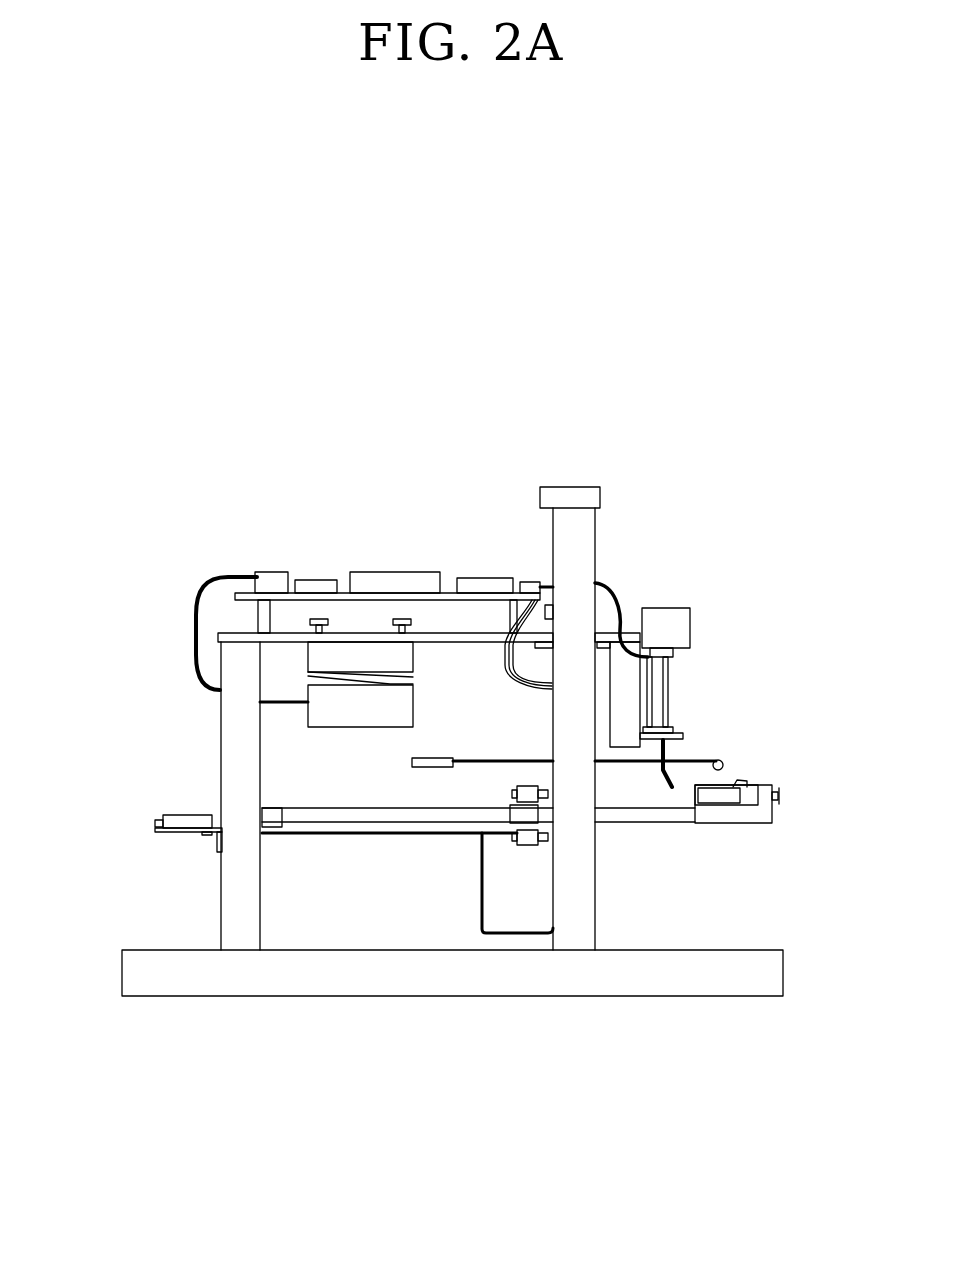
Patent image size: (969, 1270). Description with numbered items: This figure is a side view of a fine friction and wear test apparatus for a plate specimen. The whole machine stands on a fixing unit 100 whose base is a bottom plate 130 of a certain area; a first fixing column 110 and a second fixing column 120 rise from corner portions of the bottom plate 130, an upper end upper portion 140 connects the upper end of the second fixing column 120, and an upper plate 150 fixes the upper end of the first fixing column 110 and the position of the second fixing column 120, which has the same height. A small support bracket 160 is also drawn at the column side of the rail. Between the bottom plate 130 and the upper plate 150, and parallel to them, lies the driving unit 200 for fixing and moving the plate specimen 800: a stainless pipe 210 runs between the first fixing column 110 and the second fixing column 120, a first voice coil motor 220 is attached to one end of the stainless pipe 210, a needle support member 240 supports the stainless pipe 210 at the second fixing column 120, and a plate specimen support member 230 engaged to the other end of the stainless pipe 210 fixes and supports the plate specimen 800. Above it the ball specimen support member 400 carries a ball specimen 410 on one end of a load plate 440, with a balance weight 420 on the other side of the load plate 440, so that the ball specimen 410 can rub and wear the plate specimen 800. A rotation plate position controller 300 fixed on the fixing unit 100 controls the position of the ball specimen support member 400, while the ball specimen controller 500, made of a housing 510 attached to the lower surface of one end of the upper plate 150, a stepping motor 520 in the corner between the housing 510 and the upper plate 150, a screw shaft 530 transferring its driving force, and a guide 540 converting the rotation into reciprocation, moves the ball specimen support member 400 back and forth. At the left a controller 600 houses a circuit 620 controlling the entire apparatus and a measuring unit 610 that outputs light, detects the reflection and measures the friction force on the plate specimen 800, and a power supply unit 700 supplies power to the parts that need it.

The fixing unit 100 is at (441, 800).
The first fixing column 110 is at (295, 920).
The second fixing column 120 is at (587, 920).
The bottom plate 130 is at (707, 997).
The upper end upper portion 140 is at (600, 494).
The upper plate 150 is at (617, 630).
The support bracket 160 is at (202, 837).
The driving unit 200 is at (399, 868).
The stainless pipe 210 is at (368, 823).
The first voice coil motor 220 is at (170, 848).
The plate specimen support member 230 is at (722, 825).
The needle support member 240 is at (528, 852).
The rotation plate position controller 300 is at (528, 565).
The ball specimen support member 400 is at (642, 729).
The ball specimen 410 is at (725, 765).
The balance weight 420 is at (435, 755).
The load plate 440 is at (500, 757).
The ball specimen controller 500 is at (721, 648).
The housing 510 is at (630, 677).
The stepping motor 520 is at (690, 613).
The screw shaft 530 is at (667, 683).
The guide 540 is at (668, 703).
The controller 600 is at (258, 605).
The measuring unit 610 is at (302, 678).
The circuit 620 is at (363, 560).
The power supply unit 700 is at (370, 928).
The plate specimen 800 is at (705, 788).